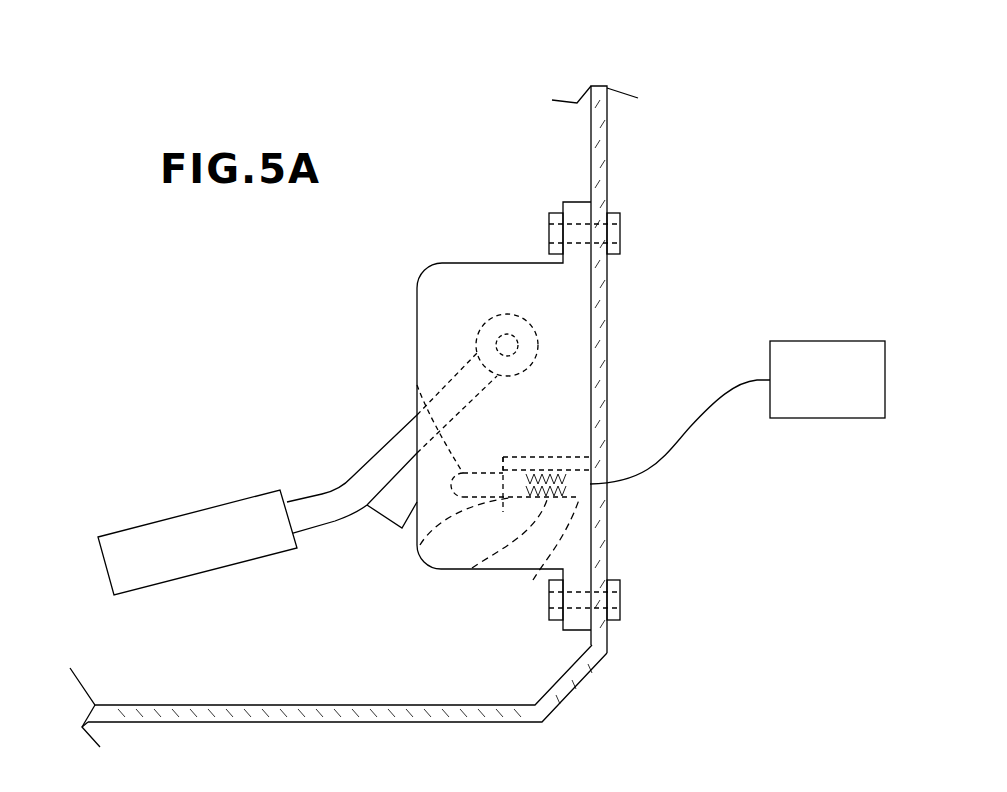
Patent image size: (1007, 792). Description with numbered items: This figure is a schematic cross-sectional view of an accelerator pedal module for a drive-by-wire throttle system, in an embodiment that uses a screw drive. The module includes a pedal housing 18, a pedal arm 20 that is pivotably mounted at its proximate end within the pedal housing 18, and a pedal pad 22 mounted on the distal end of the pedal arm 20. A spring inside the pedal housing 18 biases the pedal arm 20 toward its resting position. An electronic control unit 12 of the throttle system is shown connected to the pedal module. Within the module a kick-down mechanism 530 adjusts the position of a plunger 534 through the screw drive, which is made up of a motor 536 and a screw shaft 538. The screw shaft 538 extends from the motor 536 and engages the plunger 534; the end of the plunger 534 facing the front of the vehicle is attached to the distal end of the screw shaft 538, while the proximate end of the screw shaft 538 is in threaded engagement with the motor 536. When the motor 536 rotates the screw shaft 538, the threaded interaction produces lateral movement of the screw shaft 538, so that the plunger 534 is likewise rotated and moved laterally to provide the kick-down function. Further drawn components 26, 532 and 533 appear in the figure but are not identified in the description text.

The electronic control unit 12 is at (800, 341).
The pedal housing 18 is at (418, 290).
The pedal arm 20 is at (376, 452).
The pedal pad 22 is at (187, 510).
The vehicle wall / bulkhead 26 is at (607, 527).
The kick-down mechanism 530 is at (580, 445).
The housing 532 is at (548, 455).
The cable 533 is at (420, 547).
The plunger 534 is at (417, 385).
The motor 536 is at (533, 580).
The screw shaft 538 is at (472, 568).